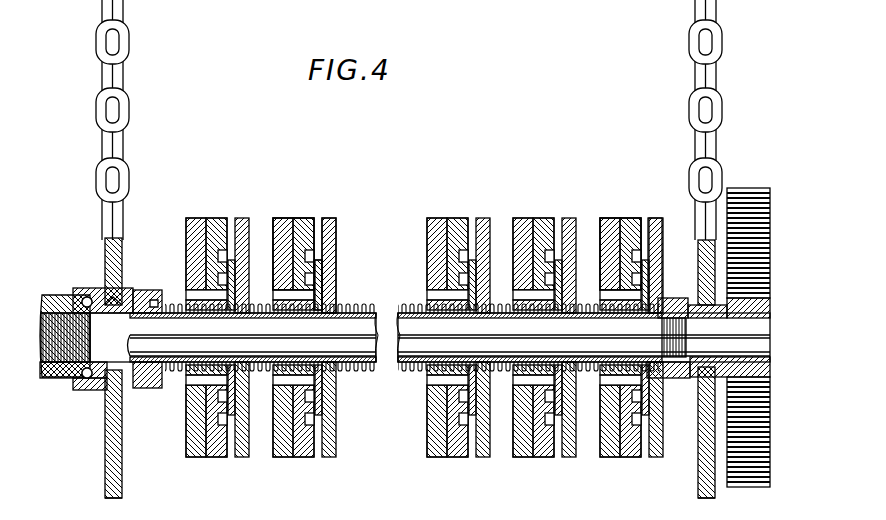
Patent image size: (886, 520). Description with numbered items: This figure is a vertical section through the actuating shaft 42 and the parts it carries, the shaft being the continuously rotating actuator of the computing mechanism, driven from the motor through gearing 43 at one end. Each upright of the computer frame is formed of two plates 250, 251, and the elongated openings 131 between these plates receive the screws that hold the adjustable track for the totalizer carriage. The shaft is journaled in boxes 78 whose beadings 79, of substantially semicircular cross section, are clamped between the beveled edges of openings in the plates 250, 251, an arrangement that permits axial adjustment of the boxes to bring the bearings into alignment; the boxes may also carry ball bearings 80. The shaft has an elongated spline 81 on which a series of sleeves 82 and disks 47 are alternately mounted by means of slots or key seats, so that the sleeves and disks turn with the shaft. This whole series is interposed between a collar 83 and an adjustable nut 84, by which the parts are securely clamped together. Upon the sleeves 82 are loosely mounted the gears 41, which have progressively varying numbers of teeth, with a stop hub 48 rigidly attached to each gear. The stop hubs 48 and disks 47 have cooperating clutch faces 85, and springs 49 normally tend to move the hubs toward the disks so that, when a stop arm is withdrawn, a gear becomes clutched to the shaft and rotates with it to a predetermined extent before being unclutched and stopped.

The elongated openings 131 is at (118, 41).
The gears 41 is at (282, 218).
The disks 47 is at (332, 218).
The stop hubs 48 is at (620, 207).
The clutch faces 85 is at (322, 268).
The springs 49 is at (355, 313).
The spline 81 is at (362, 337).
The sleeves 82 is at (350, 372).
The actuating shaft 42 is at (418, 368).
The beadings 79 is at (118, 298).
The ball bearings 80 is at (78, 381).
The boxes 78 is at (103, 382).
The collar 83 is at (152, 388).
The plate 251 is at (124, 440).
The plate 250 is at (106, 486).
The adjustable nut 84 is at (668, 298).
The gearing 43 is at (770, 420).